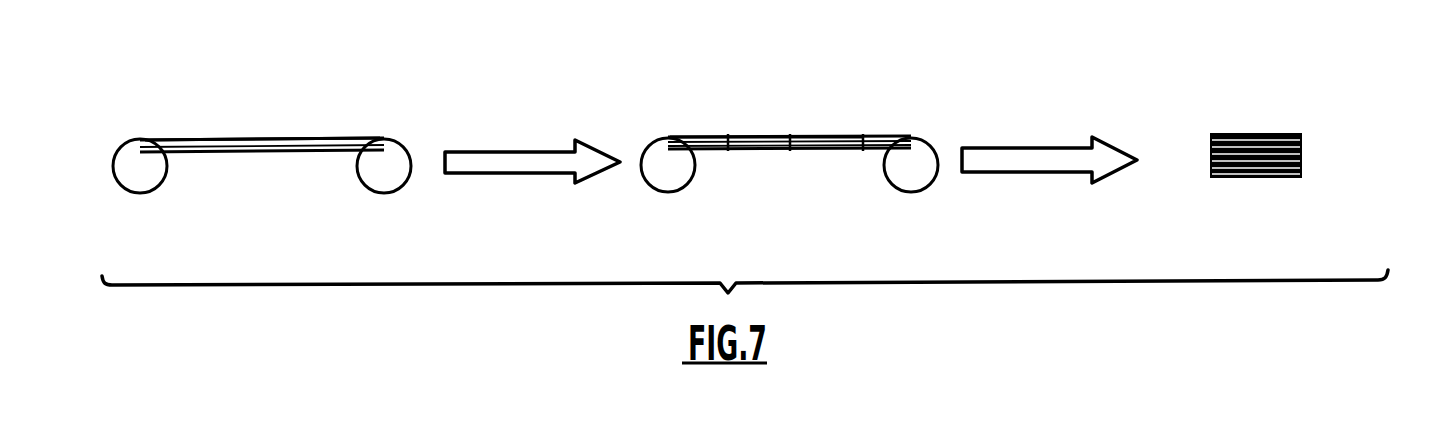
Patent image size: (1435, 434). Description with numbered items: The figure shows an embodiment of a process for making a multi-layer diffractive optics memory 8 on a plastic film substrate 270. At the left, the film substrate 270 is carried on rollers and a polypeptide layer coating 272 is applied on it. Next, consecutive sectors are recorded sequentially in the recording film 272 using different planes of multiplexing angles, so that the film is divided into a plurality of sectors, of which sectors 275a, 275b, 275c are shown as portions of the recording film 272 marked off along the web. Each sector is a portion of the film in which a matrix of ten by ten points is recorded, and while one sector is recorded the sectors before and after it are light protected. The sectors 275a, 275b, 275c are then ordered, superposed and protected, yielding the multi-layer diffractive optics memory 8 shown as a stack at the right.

The plastic film substrate 270 is at (183, 153).
The polypeptide layer coating 272 is at (289, 139).
The sector 275a is at (703, 137).
The sector 275b is at (767, 136).
The sector 275c is at (834, 136).
The multi-layer diffractive optics memory 8 is at (1326, 135).